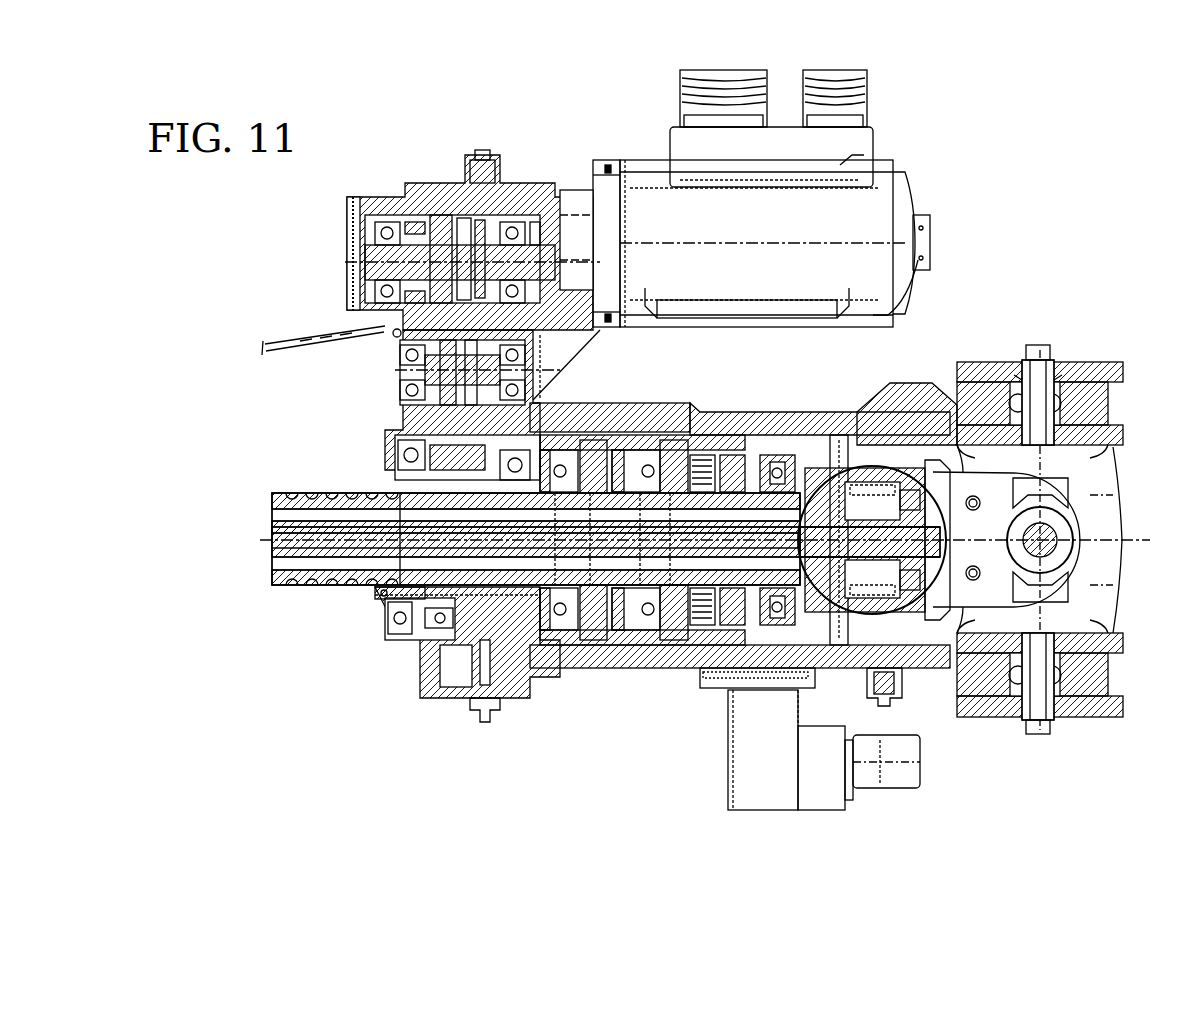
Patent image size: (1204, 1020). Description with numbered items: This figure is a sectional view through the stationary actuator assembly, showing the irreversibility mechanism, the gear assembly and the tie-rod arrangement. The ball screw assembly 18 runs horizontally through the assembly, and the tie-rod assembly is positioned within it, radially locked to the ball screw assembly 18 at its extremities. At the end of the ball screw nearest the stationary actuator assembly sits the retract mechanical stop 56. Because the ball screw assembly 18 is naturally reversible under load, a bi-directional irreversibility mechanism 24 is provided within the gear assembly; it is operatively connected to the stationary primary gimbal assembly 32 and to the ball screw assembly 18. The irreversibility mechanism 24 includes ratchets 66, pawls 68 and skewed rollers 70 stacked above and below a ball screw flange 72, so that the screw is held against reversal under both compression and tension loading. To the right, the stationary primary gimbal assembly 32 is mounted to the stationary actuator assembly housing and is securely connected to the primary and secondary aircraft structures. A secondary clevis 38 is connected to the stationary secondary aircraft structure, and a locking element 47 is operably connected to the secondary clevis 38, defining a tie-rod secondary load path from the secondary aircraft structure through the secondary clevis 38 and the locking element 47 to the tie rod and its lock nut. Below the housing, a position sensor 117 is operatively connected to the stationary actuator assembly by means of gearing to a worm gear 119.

The ball screw assembly 18 is at (300, 493).
The irreversibility mechanism 24 is at (655, 657).
The stationary primary gimbal assembly 32 is at (1097, 360).
The secondary clevis 38 is at (1093, 513).
The locking element 47 is at (928, 608).
The retract mechanical stop 56 is at (375, 594).
The ratchets 66 is at (647, 440).
The pawls 68 is at (690, 425).
The skewed rollers 70 is at (595, 450).
The ball screw flange 72 is at (612, 615).
The position sensor 117 is at (725, 800).
The worm gear 119 is at (778, 455).